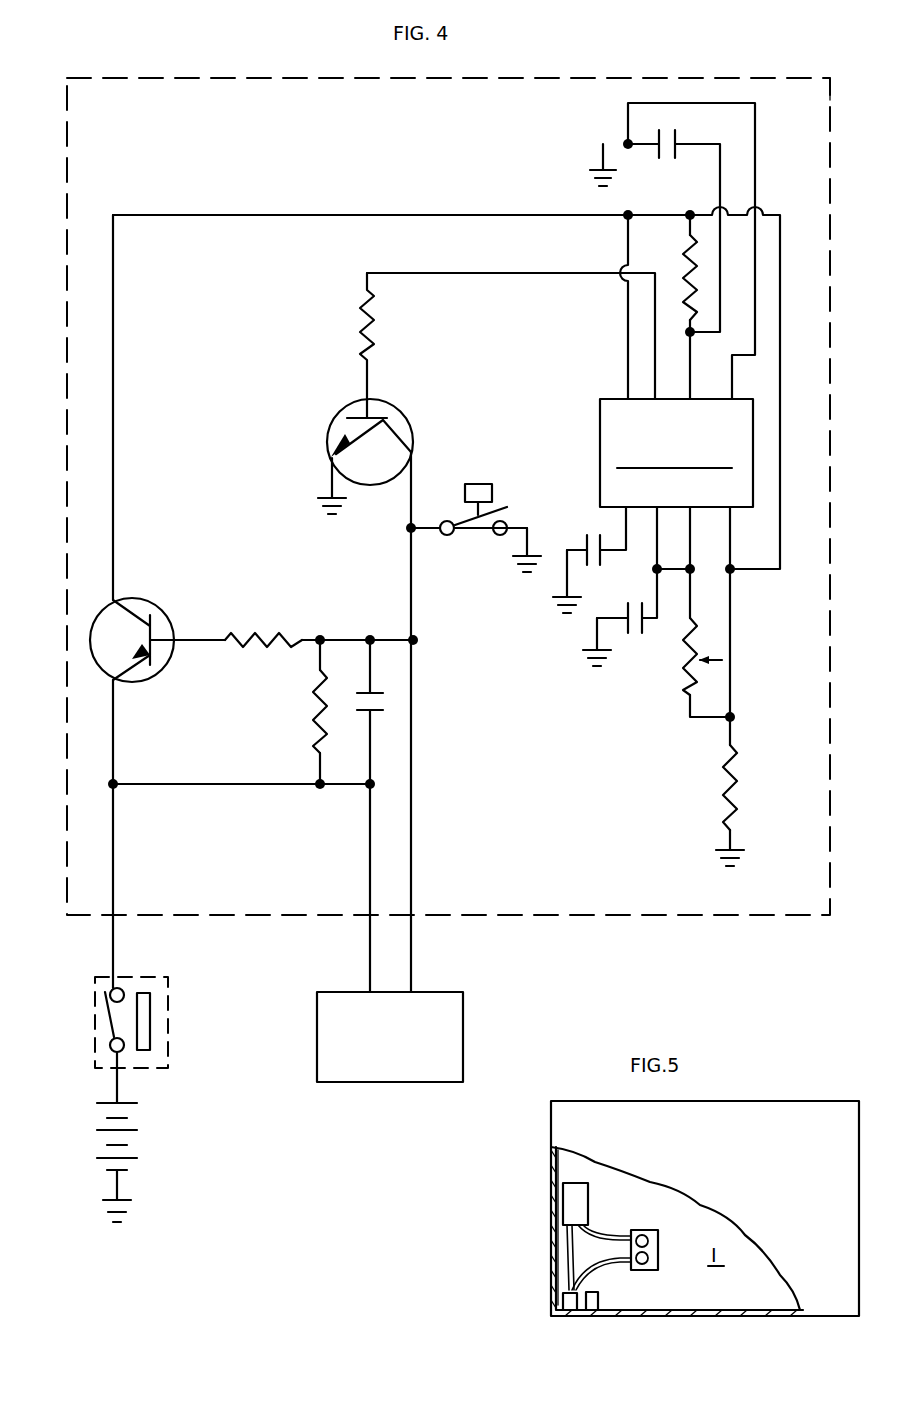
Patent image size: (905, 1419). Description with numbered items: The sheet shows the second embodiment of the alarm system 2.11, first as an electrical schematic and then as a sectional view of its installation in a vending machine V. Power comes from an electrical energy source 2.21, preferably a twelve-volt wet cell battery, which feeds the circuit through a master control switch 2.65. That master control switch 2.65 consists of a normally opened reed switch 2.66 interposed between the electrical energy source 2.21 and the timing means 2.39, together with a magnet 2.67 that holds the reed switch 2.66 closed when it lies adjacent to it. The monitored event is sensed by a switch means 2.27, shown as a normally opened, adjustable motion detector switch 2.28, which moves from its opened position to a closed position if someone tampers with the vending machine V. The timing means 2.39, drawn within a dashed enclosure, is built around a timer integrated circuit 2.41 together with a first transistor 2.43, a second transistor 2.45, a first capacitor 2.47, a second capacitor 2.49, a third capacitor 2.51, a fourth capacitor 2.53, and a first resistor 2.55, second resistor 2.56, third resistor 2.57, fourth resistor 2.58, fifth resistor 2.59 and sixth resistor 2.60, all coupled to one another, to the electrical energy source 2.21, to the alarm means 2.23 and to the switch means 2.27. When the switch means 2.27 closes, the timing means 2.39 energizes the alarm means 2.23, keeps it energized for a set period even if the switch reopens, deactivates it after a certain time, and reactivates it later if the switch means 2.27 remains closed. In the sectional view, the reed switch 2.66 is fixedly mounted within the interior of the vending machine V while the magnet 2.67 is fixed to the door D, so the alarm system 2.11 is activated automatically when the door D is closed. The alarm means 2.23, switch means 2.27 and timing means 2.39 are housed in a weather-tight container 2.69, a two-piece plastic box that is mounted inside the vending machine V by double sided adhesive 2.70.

In FIG. 4, the alarm system 2.11 is at (780, 52).
In FIG. 5, the alarm system 2.11 is at (524, 1300).
In FIG. 4, the timing means 2.39 is at (568, 78).
In FIG. 4, the RC 555 integrated circuit 2.41 is at (603, 420).
In FIG. 4, the second capacitor 2.49 is at (682, 152).
In FIG. 4, the first resistor 2.55 is at (683, 270).
In FIG. 4, the second resistor 2.56 is at (357, 328).
In FIG. 4, the second transistor 2.45 is at (402, 430).
In FIG. 4, the switch means 2.27 is at (508, 478).
In FIG. 4, the motion detector switch 2.28 is at (470, 522).
In FIG. 4, the first transistor 2.43 is at (160, 622).
In FIG. 4, the third resistor 2.57 is at (313, 612).
In FIG. 4, the fourth resistor 2.58 is at (312, 722).
In FIG. 4, the third capacitor 2.51 is at (390, 708).
In FIG. 4, the first capacitor 2.47 is at (598, 532).
In FIG. 4, the fourth capacitor 2.53 is at (640, 640).
In FIG. 4, the fifth resistor 2.59 is at (685, 680).
In FIG. 4, the sixth resistor 2.60 is at (724, 780).
In FIG. 4, the master control switch 2.65 is at (133, 1020).
In FIG. 5, the master control switch 2.65 is at (567, 1314).
In FIG. 4, the reed switch 2.66 is at (112, 1024).
In FIG. 5, the reed switch 2.66 is at (575, 1312).
In FIG. 4, the magnet 2.67 is at (143, 1035).
In FIG. 5, the magnet 2.67 is at (597, 1312).
In FIG. 4, the electrical energy source 2.21 is at (136, 1148).
In FIG. 5, the electrical energy source 2.21 is at (650, 1250).
In FIG. 4, the alarm means 2.23 is at (447, 1030).
In FIG. 5, the weather-tight container 2.69 is at (575, 1183).
In FIG. 5, the double sided adhesive 2.70 is at (560, 1203).
In FIG. 5, the vending machine V is at (774, 1094).
In FIG. 5, the door D is at (748, 1316).